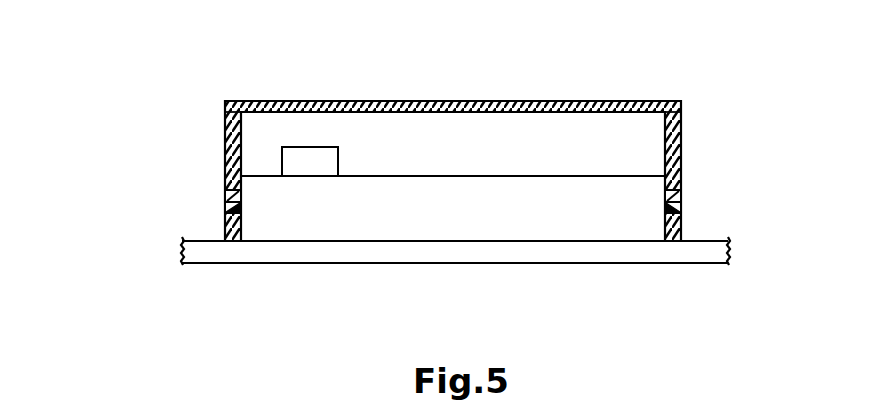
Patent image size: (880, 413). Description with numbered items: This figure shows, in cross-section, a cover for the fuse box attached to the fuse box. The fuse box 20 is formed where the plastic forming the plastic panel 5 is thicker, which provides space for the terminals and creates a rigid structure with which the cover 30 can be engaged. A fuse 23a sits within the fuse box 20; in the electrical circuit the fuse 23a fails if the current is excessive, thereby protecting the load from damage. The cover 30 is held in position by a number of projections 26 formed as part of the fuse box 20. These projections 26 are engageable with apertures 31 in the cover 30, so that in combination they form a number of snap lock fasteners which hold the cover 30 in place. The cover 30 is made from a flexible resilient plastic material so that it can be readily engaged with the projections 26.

The plastic panel 5 is at (313, 270).
The cover 30 is at (335, 92).
The fuse box 20 is at (519, 167).
The fuse 23a is at (338, 156).
The apertures 31 is at (225, 197).
The projections 26 is at (225, 202).